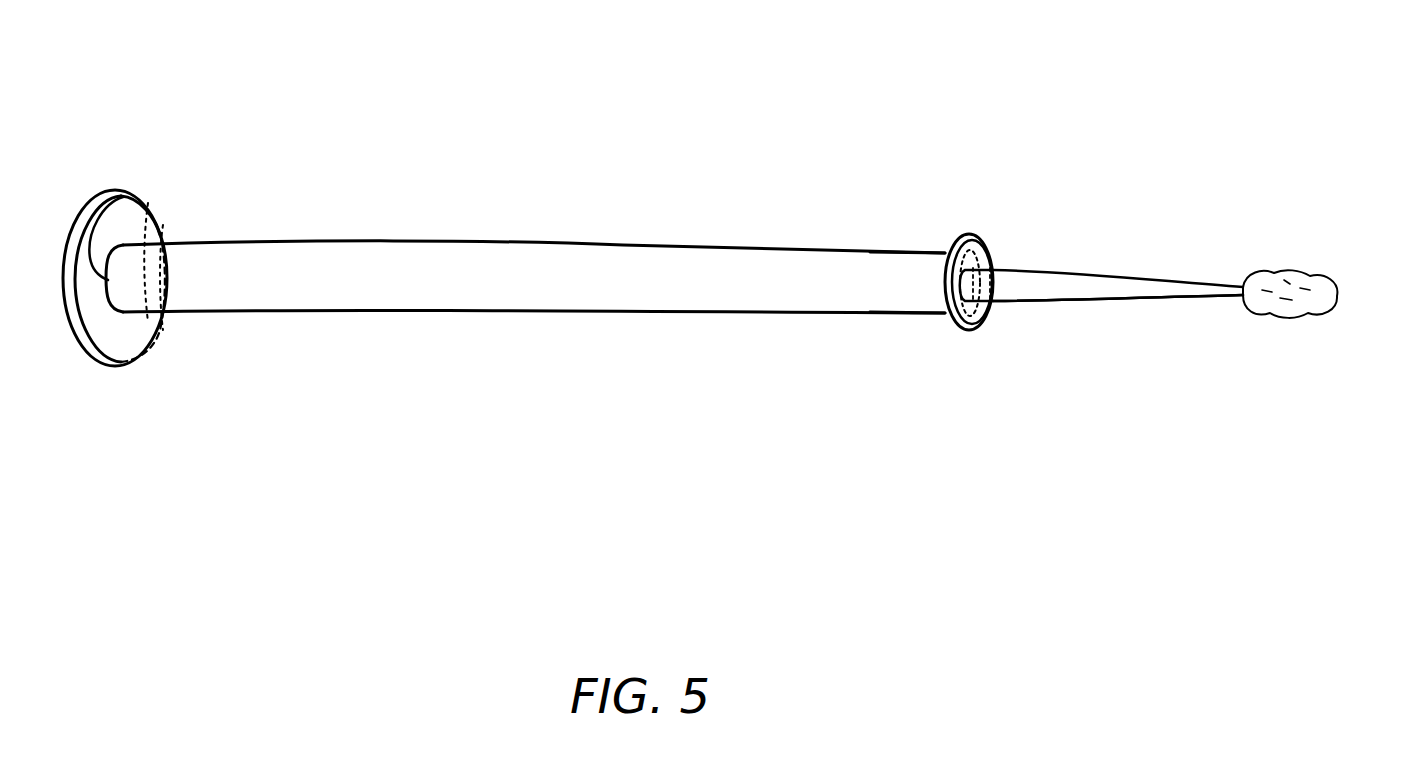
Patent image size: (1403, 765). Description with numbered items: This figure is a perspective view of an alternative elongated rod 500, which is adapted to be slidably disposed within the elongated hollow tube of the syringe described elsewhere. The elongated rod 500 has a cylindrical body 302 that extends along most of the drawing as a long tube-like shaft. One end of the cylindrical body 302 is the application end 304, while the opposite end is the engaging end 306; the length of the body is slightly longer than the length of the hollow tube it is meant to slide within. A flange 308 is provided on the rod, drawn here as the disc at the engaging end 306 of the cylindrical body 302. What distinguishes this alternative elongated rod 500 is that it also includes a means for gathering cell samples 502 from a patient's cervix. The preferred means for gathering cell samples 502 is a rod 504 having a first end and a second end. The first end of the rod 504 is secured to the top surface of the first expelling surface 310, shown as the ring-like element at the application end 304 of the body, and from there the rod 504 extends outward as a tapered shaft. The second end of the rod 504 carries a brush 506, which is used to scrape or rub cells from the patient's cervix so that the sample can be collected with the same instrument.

The elongated rod 500 is at (1172, 70).
The cylindrical body 302 is at (582, 296).
The application end 304 is at (923, 327).
The engaging end 306 is at (128, 196).
The flange 308 is at (123, 338).
The first expelling surface 310 is at (958, 230).
The means for gathering cell samples 502 is at (1112, 277).
The rod 504 is at (1122, 290).
The brush 506 is at (1282, 283).